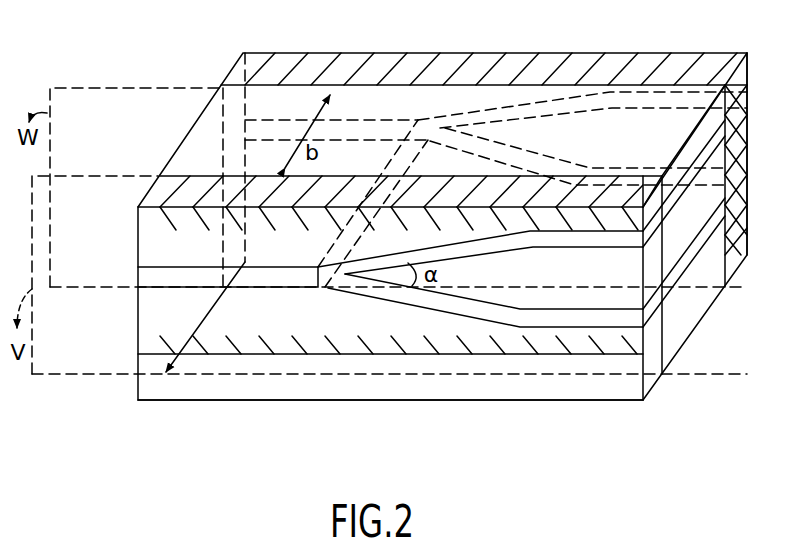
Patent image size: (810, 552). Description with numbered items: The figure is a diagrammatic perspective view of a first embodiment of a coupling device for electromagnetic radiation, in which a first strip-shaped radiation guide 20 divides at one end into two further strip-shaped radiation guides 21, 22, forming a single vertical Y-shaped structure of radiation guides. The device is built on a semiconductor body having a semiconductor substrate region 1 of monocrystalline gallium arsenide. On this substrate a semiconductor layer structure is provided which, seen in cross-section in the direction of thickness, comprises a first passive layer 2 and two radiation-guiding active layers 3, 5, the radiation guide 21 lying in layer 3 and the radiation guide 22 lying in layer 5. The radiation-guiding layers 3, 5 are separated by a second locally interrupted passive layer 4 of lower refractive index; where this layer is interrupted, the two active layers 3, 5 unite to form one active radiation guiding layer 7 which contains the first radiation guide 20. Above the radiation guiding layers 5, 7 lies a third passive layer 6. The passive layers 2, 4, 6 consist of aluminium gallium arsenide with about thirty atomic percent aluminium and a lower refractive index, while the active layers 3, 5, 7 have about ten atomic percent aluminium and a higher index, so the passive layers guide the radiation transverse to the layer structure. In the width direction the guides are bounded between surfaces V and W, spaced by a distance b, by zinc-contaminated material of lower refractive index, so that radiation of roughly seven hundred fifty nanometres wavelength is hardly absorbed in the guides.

The semiconductor substrate region 1 is at (150, 393).
The first passive layer 2 is at (145, 329).
The radiation-guiding active layer 3 is at (660, 323).
The second locally interrupted passive layer 4 is at (662, 305).
The radiation-guiding active layer 5 is at (705, 282).
The third passive layer 6 is at (145, 234).
The active radiation guiding layer 7 is at (142, 279).
The first strip-shaped radiation guide 20 is at (152, 189).
The further strip-shaped radiation guide 21 is at (703, 240).
The further strip-shaped radiation guide 22 is at (680, 193).